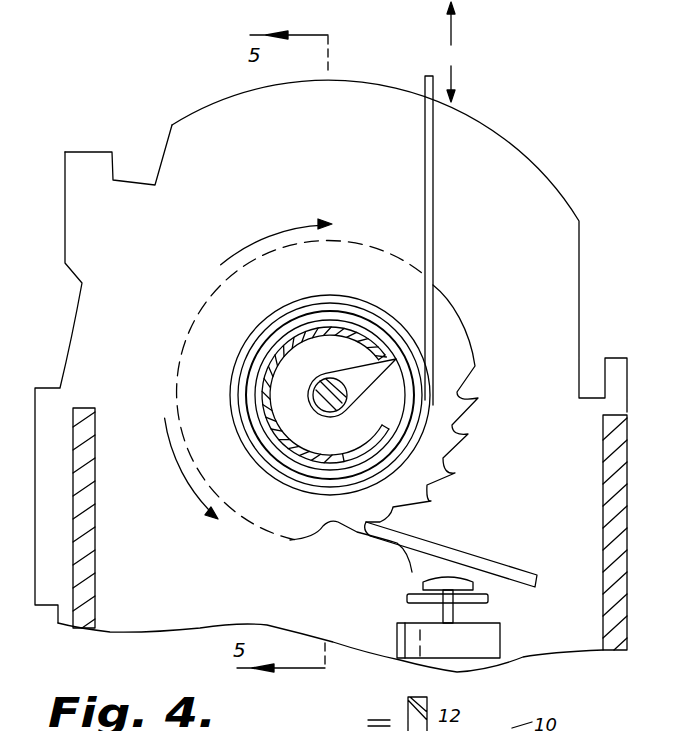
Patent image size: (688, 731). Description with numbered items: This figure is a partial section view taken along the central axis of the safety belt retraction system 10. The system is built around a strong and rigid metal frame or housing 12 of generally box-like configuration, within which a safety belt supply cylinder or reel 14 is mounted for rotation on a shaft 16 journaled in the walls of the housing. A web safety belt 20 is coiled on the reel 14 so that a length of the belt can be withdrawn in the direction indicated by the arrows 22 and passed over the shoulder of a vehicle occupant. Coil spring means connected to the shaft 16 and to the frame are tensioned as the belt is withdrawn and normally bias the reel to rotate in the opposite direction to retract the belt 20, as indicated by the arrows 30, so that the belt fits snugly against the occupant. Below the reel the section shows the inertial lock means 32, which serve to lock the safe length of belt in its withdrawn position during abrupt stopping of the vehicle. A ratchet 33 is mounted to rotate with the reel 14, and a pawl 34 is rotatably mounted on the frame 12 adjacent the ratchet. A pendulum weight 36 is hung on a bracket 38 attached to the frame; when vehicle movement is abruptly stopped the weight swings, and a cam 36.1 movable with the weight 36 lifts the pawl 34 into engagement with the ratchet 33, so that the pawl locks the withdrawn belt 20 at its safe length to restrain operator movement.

The safety belt retraction system 10 is at (535, 130).
The housing 12 is at (197, 123).
The reel 14 is at (290, 438).
The shaft 16 is at (317, 398).
The web safety belt 20 is at (435, 203).
The arrows 22 is at (453, 25).
The arrows 30 is at (453, 83).
The inertial lock means 32 is at (396, 604).
The ratchet 33 is at (457, 344).
The pawl 34 is at (453, 549).
The pendulum weight 36 is at (500, 640).
The cam 36.1 is at (422, 580).
The bracket 38 is at (488, 599).